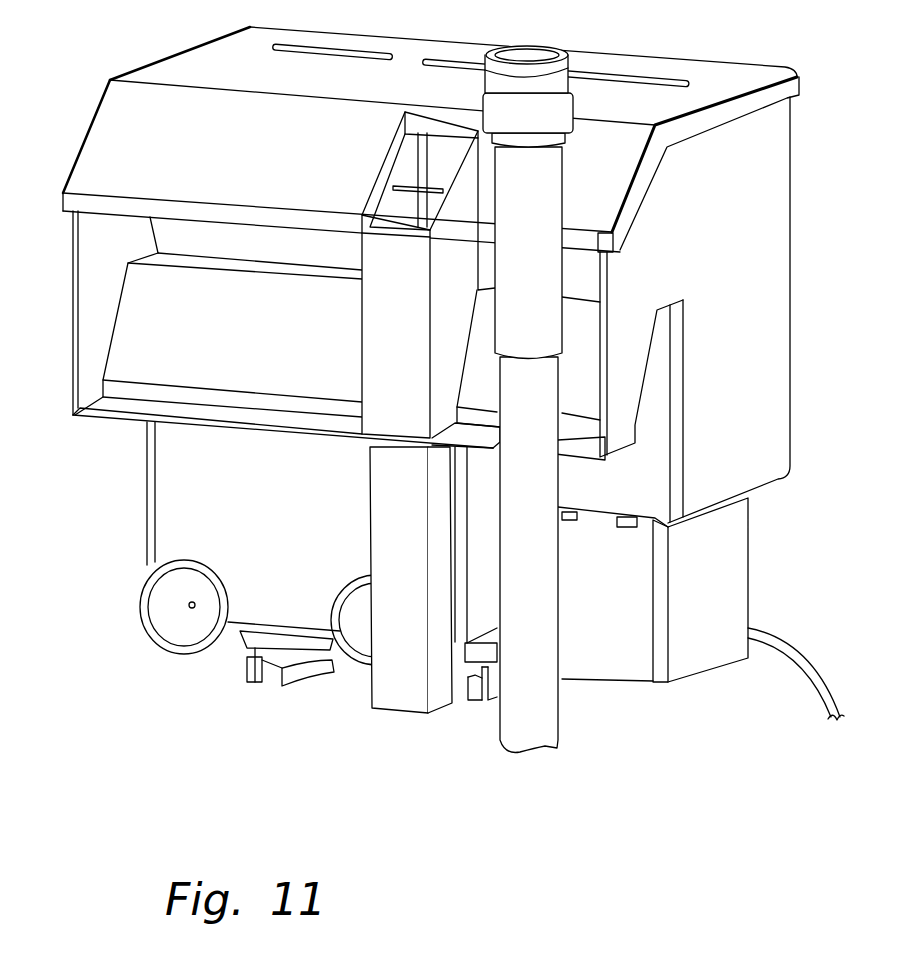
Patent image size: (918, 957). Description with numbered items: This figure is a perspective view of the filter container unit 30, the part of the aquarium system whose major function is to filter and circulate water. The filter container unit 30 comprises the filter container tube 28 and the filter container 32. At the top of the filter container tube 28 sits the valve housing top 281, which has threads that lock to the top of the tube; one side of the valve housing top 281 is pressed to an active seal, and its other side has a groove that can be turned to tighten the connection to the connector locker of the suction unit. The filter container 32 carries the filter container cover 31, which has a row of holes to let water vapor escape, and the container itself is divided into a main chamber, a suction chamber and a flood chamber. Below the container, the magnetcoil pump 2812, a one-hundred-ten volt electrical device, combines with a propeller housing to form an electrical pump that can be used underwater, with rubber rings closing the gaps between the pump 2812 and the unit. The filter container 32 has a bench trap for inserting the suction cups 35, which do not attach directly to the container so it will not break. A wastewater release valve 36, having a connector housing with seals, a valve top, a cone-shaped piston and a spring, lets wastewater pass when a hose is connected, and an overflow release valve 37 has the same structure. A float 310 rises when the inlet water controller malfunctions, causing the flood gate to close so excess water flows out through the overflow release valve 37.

The filter container unit 30 is at (86, 466).
The filter container cover 31 is at (205, 45).
The filter container 32 is at (790, 232).
The filter container tube 28 is at (562, 595).
The valve housing top 281 is at (553, 60).
The magnetcoil pump 2812 is at (750, 570).
The float 310 is at (370, 505).
The suction cups 35 is at (158, 648).
The wastewater release valve 36 is at (487, 703).
The overflow release valve 37 is at (302, 685).